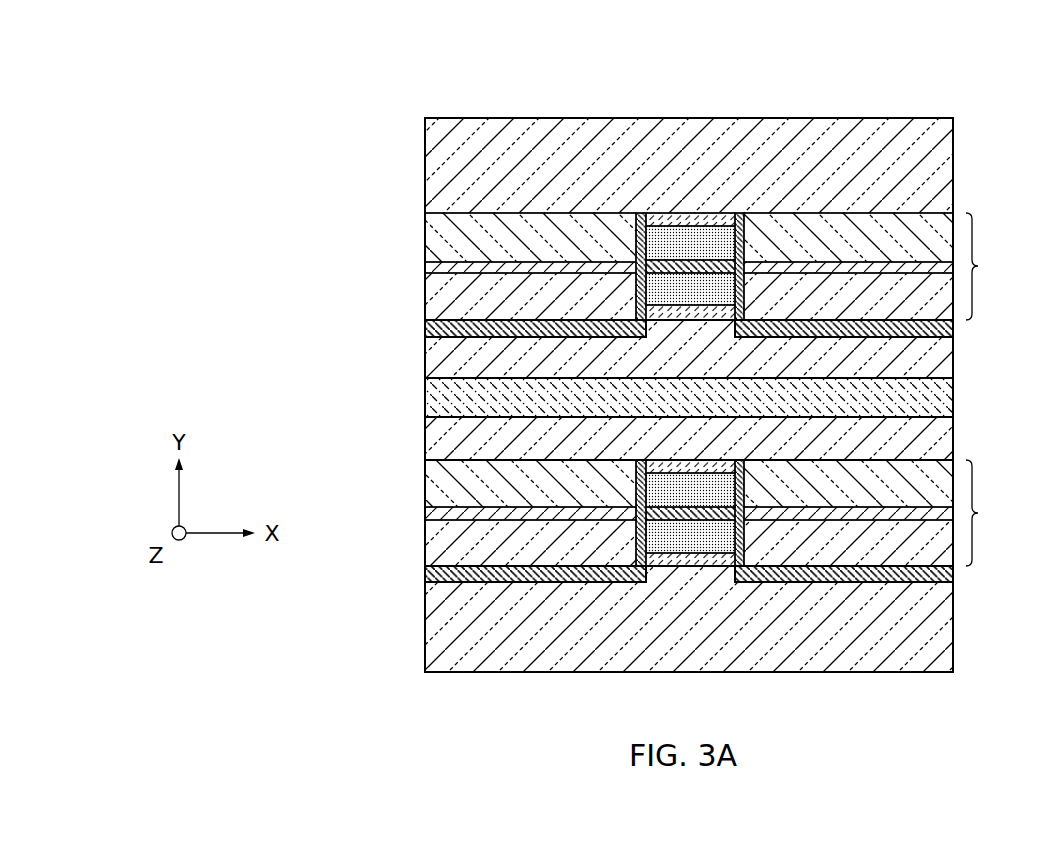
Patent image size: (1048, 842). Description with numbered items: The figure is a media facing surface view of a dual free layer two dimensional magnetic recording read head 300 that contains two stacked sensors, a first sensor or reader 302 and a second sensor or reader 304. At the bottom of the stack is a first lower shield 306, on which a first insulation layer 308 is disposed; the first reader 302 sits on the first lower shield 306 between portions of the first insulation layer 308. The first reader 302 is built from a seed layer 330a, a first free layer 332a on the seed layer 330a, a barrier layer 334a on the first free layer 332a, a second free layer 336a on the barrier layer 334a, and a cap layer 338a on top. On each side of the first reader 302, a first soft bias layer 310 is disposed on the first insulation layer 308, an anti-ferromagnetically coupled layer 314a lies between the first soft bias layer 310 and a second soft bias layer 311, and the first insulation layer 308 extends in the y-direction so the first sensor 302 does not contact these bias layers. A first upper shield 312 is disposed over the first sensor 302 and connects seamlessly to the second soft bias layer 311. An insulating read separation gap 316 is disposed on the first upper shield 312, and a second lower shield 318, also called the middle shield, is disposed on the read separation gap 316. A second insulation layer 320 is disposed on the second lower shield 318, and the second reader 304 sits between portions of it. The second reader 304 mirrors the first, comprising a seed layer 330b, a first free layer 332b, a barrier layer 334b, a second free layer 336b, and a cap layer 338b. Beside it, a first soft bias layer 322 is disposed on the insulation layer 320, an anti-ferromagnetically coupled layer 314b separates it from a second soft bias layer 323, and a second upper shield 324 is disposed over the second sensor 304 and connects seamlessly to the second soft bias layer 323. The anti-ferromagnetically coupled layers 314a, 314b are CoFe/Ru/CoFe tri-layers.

The dual free layer two dimensional magnetic recording read head 300 is at (350, 72).
The first sensor 302 is at (997, 513).
The second sensor 304 is at (997, 266).
The first lower shield 306 is at (846, 622).
The first insulation layer 308 is at (784, 584).
The first soft bias layer 310 is at (846, 557).
The second soft bias layer 311 is at (846, 499).
The first upper shield 312 is at (846, 449).
The anti-ferromagnetically coupled layer 314a is at (480, 511).
The anti-ferromagnetically coupled layer 314b is at (465, 267).
The read separation gap 316 is at (786, 408).
The second lower shield 318 is at (846, 366).
The second insulation layer 320 is at (771, 335).
The first soft bias layer 322 is at (846, 308).
The second soft bias layer 323 is at (846, 252).
The second upper shield 324 is at (846, 174).
The seed layer 330a is at (684, 572).
The seed layer 330b is at (687, 320).
The first free layer 332a is at (666, 550).
The first free layer 332b is at (666, 303).
The barrier layer 334a is at (637, 498).
The barrier layer 334b is at (637, 253).
The second free layer 336a is at (668, 502).
The second free layer 336b is at (668, 256).
The cap layer 338a is at (692, 460).
The cap layer 338b is at (701, 213).